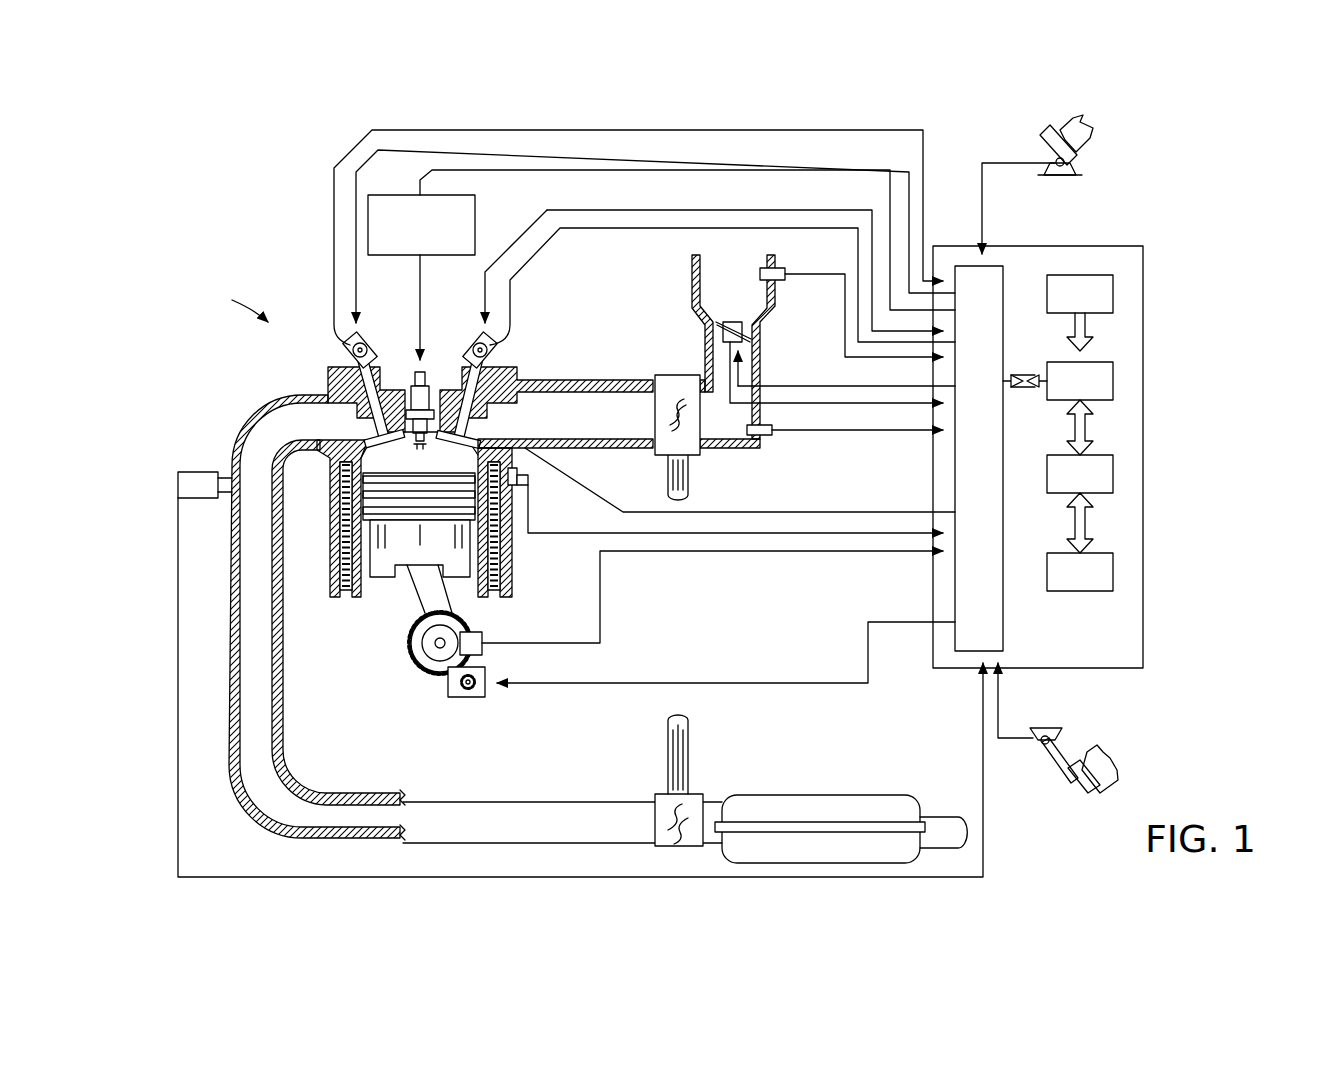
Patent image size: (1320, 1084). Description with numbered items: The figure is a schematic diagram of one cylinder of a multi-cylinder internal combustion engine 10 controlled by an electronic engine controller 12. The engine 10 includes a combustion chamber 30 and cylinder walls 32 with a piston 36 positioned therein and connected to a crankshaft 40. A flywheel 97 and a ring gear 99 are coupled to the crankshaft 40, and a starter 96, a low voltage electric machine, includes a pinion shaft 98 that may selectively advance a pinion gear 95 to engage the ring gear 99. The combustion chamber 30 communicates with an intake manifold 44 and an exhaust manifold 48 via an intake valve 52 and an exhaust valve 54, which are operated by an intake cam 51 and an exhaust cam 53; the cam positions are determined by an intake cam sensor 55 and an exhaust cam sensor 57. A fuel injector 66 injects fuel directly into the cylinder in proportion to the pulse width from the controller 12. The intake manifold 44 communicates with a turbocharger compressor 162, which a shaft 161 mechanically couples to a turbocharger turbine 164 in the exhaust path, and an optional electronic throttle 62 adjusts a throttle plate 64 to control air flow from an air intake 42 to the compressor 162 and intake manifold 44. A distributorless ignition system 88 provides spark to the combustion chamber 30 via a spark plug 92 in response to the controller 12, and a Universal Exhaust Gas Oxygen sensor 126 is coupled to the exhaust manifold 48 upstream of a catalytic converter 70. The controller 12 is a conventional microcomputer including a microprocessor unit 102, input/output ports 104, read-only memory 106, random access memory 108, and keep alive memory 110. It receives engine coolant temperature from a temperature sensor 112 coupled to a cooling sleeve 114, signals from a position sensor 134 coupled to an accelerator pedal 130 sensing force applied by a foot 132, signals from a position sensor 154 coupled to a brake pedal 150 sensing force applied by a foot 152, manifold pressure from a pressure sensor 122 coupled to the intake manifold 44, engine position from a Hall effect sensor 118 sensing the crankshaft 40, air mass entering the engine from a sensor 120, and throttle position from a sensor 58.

The internal combustion engine 10 is at (235, 301).
The electronic engine controller 12 is at (1137, 246).
The combustion chamber 30 is at (418, 458).
The cylinder walls 32 is at (368, 582).
The piston 36 is at (407, 550).
The crankshaft 40 is at (428, 668).
The air intake 42 is at (746, 302).
The intake manifold 44 is at (601, 424).
The exhaust manifold 48 is at (313, 432).
The intake cam 51 is at (473, 337).
The intake valve 52 is at (458, 424).
The exhaust cam 53 is at (367, 335).
The exhaust valve 54 is at (375, 425).
The intake cam sensor 55 is at (488, 350).
The exhaust cam sensor 57 is at (347, 352).
The throttle position sensor 58 is at (715, 345).
The electronic throttle 62 is at (747, 330).
The throttle plate 64 is at (720, 328).
The fuel injector 66 is at (520, 450).
The catalytic converter 70 is at (760, 795).
The distributorless ignition system 88 is at (380, 195).
The spark plug 92 is at (422, 368).
The pinion gear 95 is at (470, 695).
The starter 96 is at (483, 698).
The flywheel 97 is at (417, 640).
The pinion shaft 98 is at (465, 690).
The ring gear 99 is at (437, 682).
The microprocessor unit 102 is at (1113, 380).
The input/output ports 104 is at (1003, 282).
The read-only memory 106 is at (1113, 292).
The random access memory 108 is at (1113, 475).
The keep alive memory 110 is at (1113, 570).
The temperature sensor 112 is at (528, 485).
The cooling sleeve 114 is at (497, 552).
The Hall effect sensor 118 is at (482, 632).
The air mass sensor 120 is at (775, 267).
The pressure sensor 122 is at (768, 437).
The Universal Exhaust Gas Oxygen sensor 126 is at (178, 476).
The accelerator pedal 130 is at (1045, 140).
The foot 132 is at (1093, 125).
The position sensor 134 is at (1075, 160).
The brake pedal 150 is at (1065, 780).
The foot 152 is at (1098, 755).
The position sensor 154 is at (1038, 734).
The shaft 161 is at (688, 765).
The turbocharger compressor 162 is at (655, 378).
The turbocharger turbine 164 is at (660, 794).